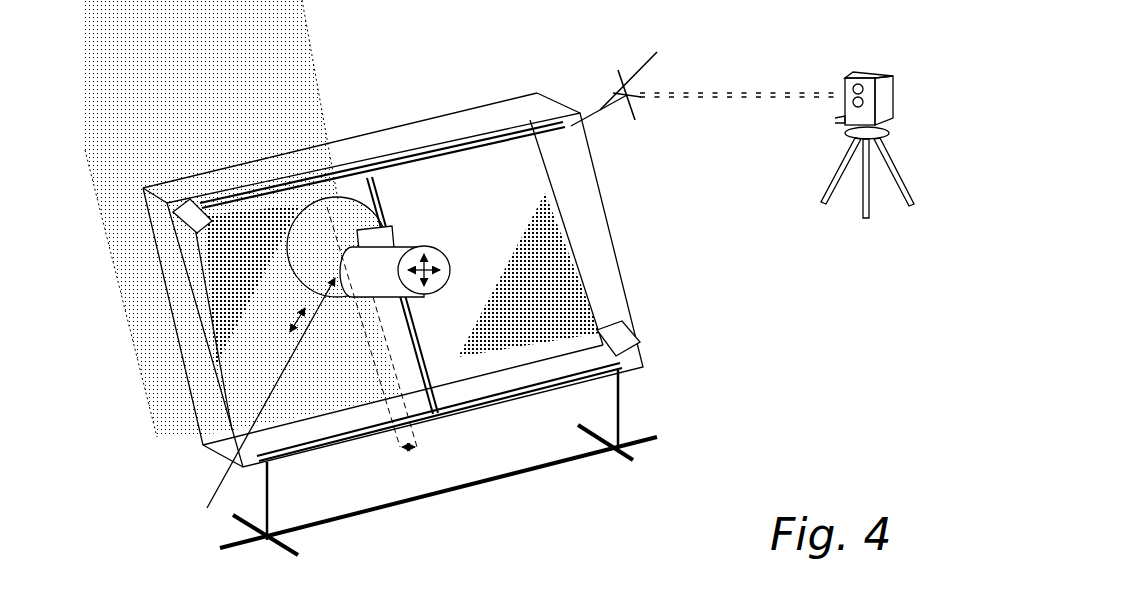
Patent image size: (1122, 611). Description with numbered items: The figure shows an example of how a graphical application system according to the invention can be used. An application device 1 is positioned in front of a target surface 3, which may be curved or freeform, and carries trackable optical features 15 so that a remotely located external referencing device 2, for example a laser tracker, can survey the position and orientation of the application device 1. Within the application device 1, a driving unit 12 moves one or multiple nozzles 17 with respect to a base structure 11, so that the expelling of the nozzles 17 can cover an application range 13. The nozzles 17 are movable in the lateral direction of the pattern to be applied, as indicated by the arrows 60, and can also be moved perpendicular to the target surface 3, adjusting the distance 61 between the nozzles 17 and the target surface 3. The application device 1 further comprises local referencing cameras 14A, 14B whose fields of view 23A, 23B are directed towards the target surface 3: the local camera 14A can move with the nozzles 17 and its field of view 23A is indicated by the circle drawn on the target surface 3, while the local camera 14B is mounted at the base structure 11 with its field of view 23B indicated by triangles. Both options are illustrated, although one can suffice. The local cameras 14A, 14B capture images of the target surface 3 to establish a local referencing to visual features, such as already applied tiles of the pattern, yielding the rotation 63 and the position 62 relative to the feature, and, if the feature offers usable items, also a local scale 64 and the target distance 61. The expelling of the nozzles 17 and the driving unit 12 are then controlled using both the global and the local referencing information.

The application device 1 is at (433, 324).
The external referencing device 2 is at (858, 174).
The target surface 3 is at (341, 91).
The base structure 11 is at (389, 103).
The driving unit 12 is at (450, 216).
The application range 13 is at (455, 211).
The local referencing camera 14A is at (382, 149).
The local referencing camera 14B is at (446, 190).
The trackable optical features 15 is at (704, 84).
The nozzles 17 is at (512, 196).
The field of view 23A is at (204, 345).
The field of view 23B is at (398, 323).
The arrows 60 is at (509, 234).
The distance 61 is at (241, 406).
The position 62 is at (348, 183).
The rotation 63 is at (455, 374).
The local scale 64 is at (373, 427).